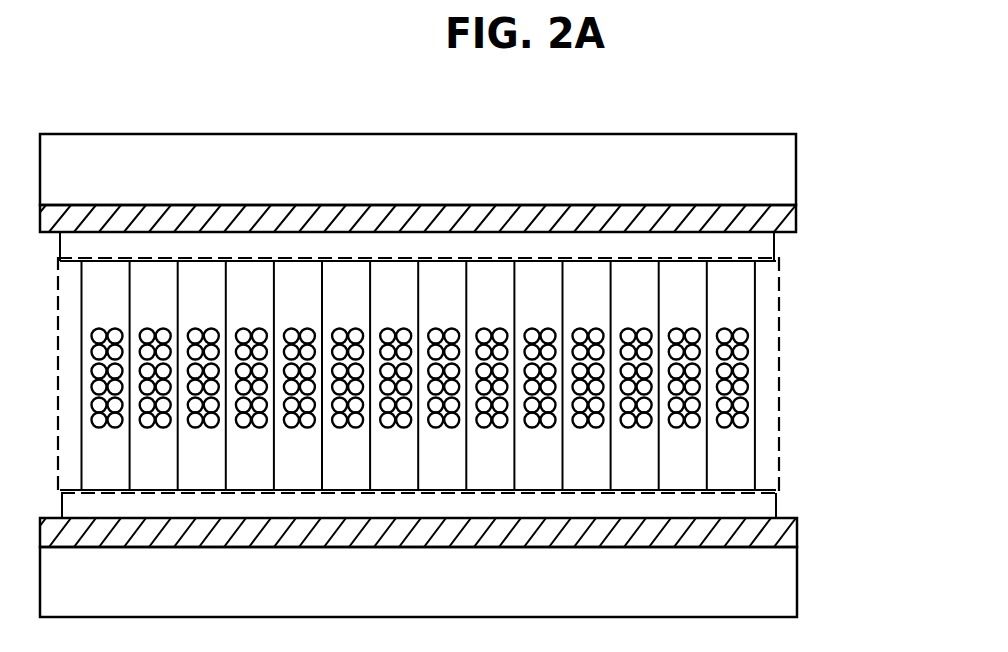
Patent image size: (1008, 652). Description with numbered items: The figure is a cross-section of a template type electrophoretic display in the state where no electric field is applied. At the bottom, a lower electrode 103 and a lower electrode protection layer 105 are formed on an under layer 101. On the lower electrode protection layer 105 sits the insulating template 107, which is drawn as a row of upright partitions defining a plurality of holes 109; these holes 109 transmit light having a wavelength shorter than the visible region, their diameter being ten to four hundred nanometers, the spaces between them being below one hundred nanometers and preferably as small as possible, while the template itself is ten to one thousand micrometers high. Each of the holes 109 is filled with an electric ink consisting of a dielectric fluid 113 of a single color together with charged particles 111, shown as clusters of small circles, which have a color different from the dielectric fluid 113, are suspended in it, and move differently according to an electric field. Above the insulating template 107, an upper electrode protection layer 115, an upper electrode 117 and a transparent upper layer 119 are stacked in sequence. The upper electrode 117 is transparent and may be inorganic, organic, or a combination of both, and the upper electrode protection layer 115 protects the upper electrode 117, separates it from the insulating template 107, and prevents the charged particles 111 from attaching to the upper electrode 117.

The under layer 101 is at (783, 582).
The lower electrode 103 is at (790, 532).
The lower electrode protection layer 105 is at (768, 503).
The insulating template 107 is at (779, 450).
The holes 109 is at (753, 380).
The charged particles 111 is at (747, 353).
The dielectric fluid 113 is at (747, 297).
The upper electrode protection layer 115 is at (768, 247).
The upper electrode 117 is at (788, 220).
The transparent upper layer 119 is at (782, 170).